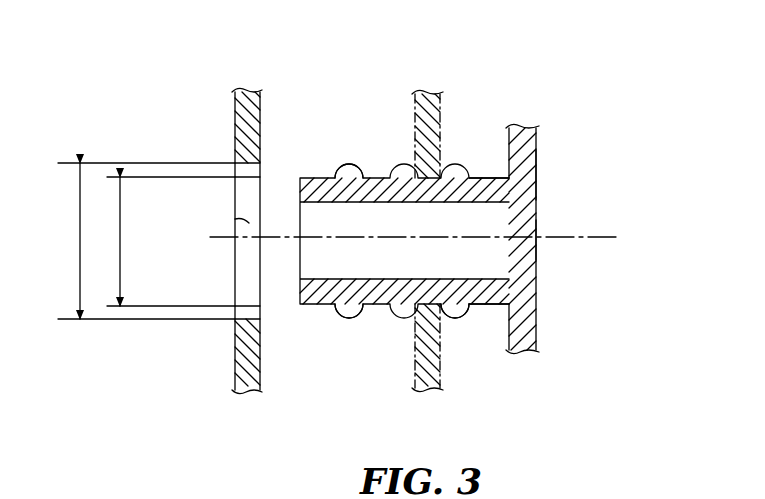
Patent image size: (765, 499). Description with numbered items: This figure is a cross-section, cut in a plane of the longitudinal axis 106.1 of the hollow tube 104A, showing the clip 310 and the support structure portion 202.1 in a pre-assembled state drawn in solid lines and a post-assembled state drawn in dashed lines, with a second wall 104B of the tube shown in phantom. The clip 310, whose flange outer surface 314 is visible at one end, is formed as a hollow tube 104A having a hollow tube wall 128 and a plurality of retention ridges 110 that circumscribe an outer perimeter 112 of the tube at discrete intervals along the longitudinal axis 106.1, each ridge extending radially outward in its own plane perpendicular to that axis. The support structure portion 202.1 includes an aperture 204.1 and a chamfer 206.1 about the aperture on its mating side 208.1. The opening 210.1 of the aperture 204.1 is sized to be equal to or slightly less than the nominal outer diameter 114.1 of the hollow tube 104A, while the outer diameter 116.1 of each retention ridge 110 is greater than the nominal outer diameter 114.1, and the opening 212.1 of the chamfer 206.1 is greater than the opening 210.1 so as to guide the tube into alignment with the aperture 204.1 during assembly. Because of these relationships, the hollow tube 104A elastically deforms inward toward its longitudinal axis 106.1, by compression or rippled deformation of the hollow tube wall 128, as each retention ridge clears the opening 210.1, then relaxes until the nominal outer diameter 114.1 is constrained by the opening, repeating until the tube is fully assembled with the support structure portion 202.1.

The support structure portion 202.1 is at (235, 377).
The aperture 204.1 is at (235, 220).
The chamfer 206.1 is at (256, 176).
The mating side 208.1 is at (263, 369).
The opening of the aperture 210.1 is at (151, 251).
The opening of the chamfer 212.1 is at (114, 287).
The hollow tube wall 128 is at (316, 306).
The nominal outer diameter 114.1 is at (375, 176).
The outer diameter of retention ridge 116.1 is at (375, 306).
The retention ridges 110 is at (457, 321).
The outer perimeter 112 is at (490, 307).
The hollow tube 104A is at (484, 176).
The clip 310 is at (542, 126).
The flange outer surface 314 is at (536, 175).
The longitudinal axis 106.1 is at (546, 233).
The second wall (phantom) 104B is at (427, 240).